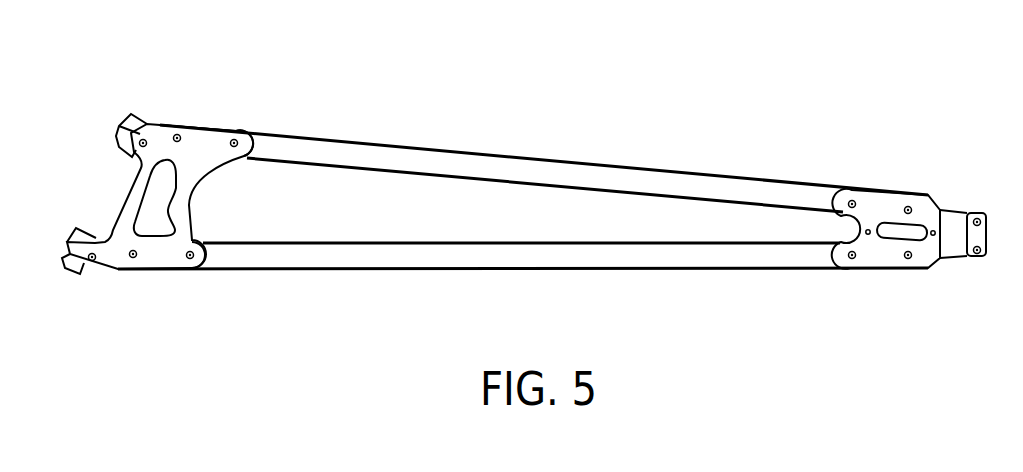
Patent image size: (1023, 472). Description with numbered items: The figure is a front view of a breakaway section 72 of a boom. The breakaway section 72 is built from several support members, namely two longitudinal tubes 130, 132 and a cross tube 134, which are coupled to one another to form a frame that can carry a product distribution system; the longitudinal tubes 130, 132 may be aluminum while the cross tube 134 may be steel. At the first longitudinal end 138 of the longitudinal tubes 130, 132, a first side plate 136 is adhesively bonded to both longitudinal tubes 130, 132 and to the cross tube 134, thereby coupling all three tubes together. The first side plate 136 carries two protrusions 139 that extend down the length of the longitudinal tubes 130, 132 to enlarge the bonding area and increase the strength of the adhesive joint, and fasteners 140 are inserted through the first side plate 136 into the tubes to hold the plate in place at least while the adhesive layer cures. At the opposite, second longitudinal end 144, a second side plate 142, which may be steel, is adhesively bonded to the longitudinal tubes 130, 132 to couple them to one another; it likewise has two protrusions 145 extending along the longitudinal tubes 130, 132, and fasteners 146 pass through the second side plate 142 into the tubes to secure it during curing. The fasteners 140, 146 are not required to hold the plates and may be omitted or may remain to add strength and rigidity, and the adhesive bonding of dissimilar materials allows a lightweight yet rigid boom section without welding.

The breakaway section 72 is at (688, 64).
The longitudinal tube 130 is at (493, 163).
The longitudinal tube 132 is at (510, 264).
The cross tube 134 is at (149, 173).
The first side plate 136 is at (208, 140).
The first longitudinal end 138 is at (265, 98).
The protrusions 139 is at (248, 144).
The fasteners 140 is at (176, 135).
The second side plate 142 is at (875, 198).
The second longitudinal end 144 is at (816, 143).
The protrusions 145 is at (848, 201).
The fasteners 146 is at (977, 218).